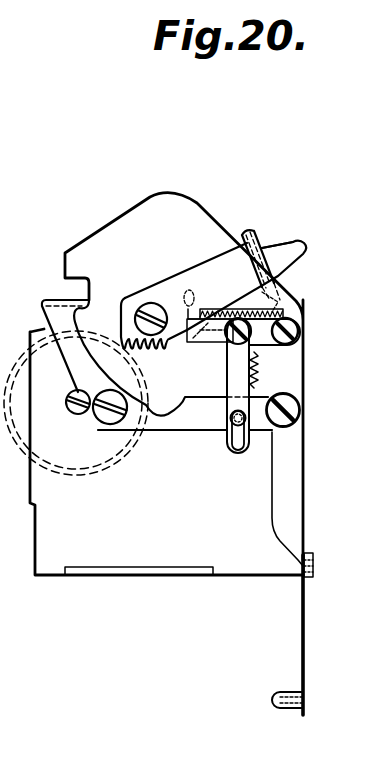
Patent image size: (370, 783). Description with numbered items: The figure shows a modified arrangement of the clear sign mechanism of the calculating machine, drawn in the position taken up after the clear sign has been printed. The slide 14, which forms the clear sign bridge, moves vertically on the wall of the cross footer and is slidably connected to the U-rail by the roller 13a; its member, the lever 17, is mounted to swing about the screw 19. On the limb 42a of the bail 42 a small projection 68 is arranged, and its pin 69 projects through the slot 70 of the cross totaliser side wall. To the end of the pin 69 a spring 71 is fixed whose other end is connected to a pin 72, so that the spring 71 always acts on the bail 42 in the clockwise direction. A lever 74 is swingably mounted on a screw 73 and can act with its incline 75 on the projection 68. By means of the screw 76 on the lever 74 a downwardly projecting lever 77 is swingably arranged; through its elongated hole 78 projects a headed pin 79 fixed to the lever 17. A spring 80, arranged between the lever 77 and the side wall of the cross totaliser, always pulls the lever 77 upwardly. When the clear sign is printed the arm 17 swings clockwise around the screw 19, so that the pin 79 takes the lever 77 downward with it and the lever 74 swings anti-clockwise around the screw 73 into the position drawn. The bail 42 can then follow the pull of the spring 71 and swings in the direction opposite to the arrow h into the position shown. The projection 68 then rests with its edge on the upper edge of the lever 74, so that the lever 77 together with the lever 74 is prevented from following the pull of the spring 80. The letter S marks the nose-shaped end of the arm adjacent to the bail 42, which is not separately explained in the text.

The roller 13a is at (262, 694).
The slide 14 is at (297, 473).
The lever 17 is at (168, 421).
The screw 19 is at (110, 421).
The bail 42 is at (253, 236).
The limb 42a is at (217, 265).
The projection 68 is at (188, 312).
The pin 69 is at (206, 312).
The slot 70 is at (194, 297).
The spring 71 is at (258, 318).
The pin 72 is at (291, 318).
The screw 73 is at (300, 331).
The lever 74 is at (196, 338).
The incline 75 is at (208, 336).
The screw 76 is at (250, 338).
The lever 77 is at (246, 372).
The elongated hole 78 is at (236, 449).
The headed pin 79 is at (230, 428).
The spring 80 is at (256, 370).
The arrow h is at (131, 300).
The nose S is at (279, 276).